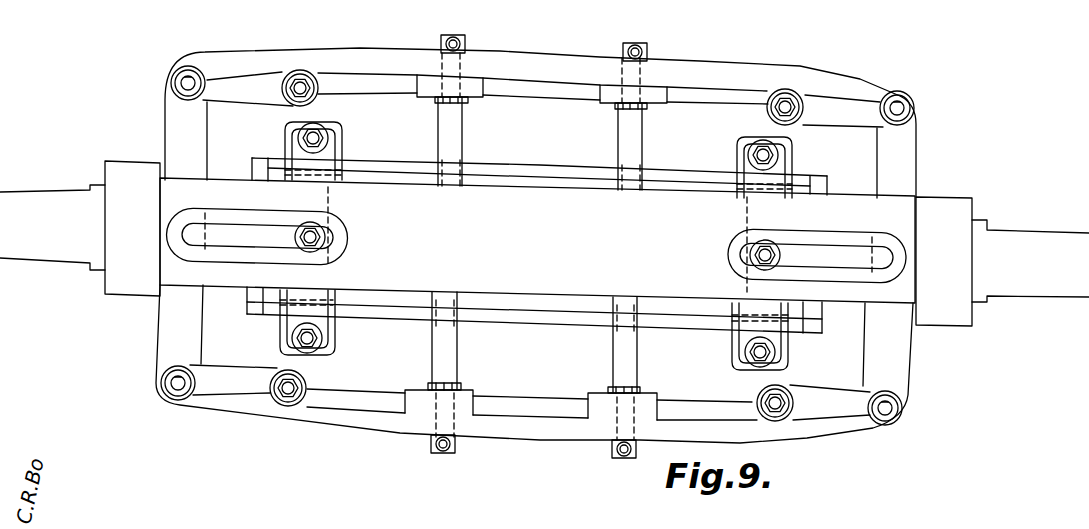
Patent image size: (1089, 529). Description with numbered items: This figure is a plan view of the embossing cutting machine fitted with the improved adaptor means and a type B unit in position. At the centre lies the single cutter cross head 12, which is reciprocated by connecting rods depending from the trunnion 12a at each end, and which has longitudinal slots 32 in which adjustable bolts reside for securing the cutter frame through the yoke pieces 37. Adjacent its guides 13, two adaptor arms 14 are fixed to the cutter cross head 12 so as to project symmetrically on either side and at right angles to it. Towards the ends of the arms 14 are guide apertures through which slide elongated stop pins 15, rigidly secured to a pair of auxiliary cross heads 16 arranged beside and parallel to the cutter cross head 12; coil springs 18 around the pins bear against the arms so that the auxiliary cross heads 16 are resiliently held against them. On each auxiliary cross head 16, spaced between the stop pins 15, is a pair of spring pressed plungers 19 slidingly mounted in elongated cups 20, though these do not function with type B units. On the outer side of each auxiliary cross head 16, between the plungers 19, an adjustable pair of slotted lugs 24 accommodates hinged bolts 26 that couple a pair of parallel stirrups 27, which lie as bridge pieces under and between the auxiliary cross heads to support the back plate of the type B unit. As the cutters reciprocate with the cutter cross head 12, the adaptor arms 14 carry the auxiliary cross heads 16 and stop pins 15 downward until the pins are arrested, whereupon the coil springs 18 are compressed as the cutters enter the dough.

The cutter cross head 12 is at (537, 245).
The trunnion 12a is at (544, 243).
The guides 13 is at (130, 173).
The adaptor arms 14 is at (888, 147).
The stop pins 15 is at (184, 74).
The auxiliary cross heads 16 is at (563, 70).
The coil springs 18 is at (944, 261).
The spring pressed plungers 19 is at (316, 92).
The elongated cups 20 is at (303, 70).
The slotted lugs 24 is at (647, 50).
The hinged bolts 26 is at (466, 45).
The stirrups 27 is at (450, 135).
The longitudinal slots 32 is at (326, 236).
The yoke pieces 37 is at (340, 140).